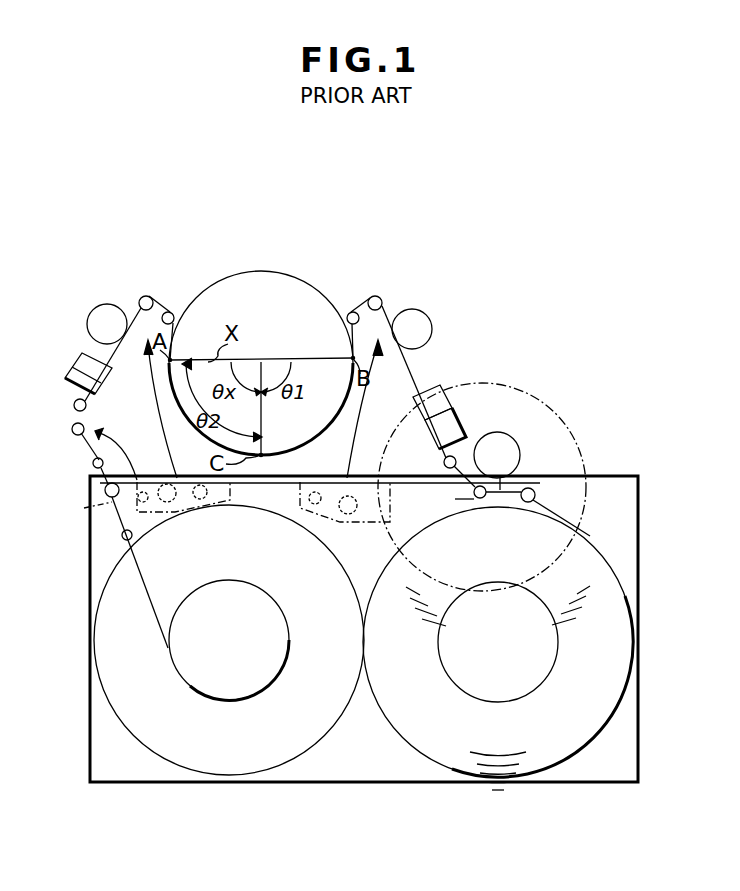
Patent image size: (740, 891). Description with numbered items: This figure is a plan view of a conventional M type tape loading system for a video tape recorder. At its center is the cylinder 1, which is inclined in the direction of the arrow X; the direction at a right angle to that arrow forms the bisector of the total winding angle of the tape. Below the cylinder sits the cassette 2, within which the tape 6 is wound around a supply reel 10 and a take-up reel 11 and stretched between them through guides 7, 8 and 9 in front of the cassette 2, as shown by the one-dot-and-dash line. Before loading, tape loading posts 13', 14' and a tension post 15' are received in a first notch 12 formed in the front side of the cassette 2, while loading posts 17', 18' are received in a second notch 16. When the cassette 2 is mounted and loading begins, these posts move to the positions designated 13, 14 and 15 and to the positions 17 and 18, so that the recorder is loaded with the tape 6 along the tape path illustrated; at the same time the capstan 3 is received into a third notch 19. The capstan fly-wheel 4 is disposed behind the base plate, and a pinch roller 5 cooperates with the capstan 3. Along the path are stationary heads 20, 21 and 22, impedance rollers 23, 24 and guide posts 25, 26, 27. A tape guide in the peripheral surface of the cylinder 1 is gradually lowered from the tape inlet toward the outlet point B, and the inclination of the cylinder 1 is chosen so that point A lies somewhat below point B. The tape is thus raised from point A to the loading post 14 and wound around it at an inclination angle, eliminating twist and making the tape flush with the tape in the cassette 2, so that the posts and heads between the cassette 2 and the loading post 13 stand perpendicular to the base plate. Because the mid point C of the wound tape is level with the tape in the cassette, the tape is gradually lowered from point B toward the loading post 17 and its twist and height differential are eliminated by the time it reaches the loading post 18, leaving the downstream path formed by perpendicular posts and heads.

The cylinder 1 is at (280, 290).
The cassette 2 is at (556, 783).
The capstan 3 is at (455, 499).
The capstan fly-wheel 4 is at (566, 438).
The pinch roller 5 is at (503, 440).
The tape 6 is at (148, 602).
The guide 7 is at (122, 537).
The guide 8 is at (104, 490).
The guide 9 is at (534, 489).
The supply reel 10 is at (188, 658).
The take-up reel 11 is at (456, 676).
The first notch 12 is at (205, 488).
The tape loading post 13 is at (136, 283).
The loading post 14 is at (180, 297).
The tension post 15 is at (58, 426).
The second notch 16 is at (296, 496).
The loading post 17 is at (346, 302).
The loading post 18 is at (388, 285).
The third notch 19 is at (500, 500).
The stationary head 20 is at (80, 364).
The stationary head 21 is at (427, 394).
The stationary head 22 is at (456, 424).
The impedance roller 23 is at (96, 318).
The impedance roller 24 is at (420, 320).
The guide post 25 is at (93, 464).
The guide post 26 is at (74, 404).
The guide post 27 is at (444, 463).
The tape loading post 13' is at (184, 514).
The tape loading post 14' is at (152, 471).
The tension post 15' is at (78, 510).
The loading post 17' is at (329, 473).
The loading post 18' is at (356, 526).